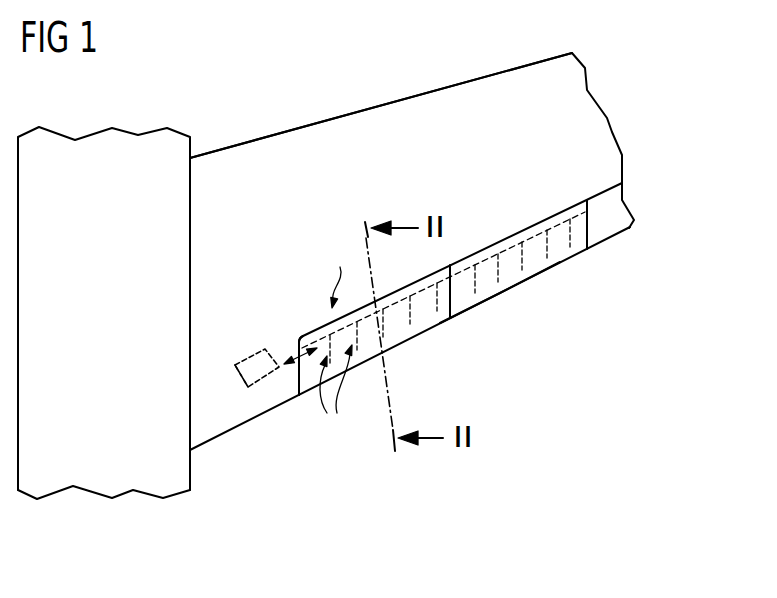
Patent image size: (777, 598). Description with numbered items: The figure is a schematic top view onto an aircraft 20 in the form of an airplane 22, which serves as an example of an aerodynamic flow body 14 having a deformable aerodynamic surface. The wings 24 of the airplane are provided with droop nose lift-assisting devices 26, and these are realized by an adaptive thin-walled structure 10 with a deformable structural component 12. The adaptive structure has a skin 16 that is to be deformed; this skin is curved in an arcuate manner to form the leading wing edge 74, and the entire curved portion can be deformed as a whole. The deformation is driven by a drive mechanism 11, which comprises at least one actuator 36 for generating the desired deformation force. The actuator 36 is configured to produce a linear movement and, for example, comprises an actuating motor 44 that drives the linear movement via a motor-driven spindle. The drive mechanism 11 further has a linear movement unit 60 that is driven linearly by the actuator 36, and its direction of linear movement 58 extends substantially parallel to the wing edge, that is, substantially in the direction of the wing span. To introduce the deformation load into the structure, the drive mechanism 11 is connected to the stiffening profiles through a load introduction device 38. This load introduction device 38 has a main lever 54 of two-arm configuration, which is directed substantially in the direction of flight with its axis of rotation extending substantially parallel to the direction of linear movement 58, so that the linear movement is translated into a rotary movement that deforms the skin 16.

The adaptive thin-walled structure 10 is at (528, 350).
The drive mechanism 11 is at (342, 273).
The deformable structural component 12 is at (533, 282).
The aerodynamic flow body 14 is at (598, 131).
The skin 16 is at (438, 305).
The aircraft 20 is at (180, 475).
The airplane 22 is at (188, 205).
The wings 24 is at (390, 117).
The droop nose lift-assisting devices 26 is at (358, 395).
The actuator 36 is at (247, 340).
The load introduction device 38 is at (333, 394).
The actuating motor 44 is at (255, 378).
The main lever 54 is at (410, 320).
The direction of linear movement 58 is at (302, 337).
The linear movement unit 60 is at (282, 355).
The leading wing edge 74 is at (474, 318).